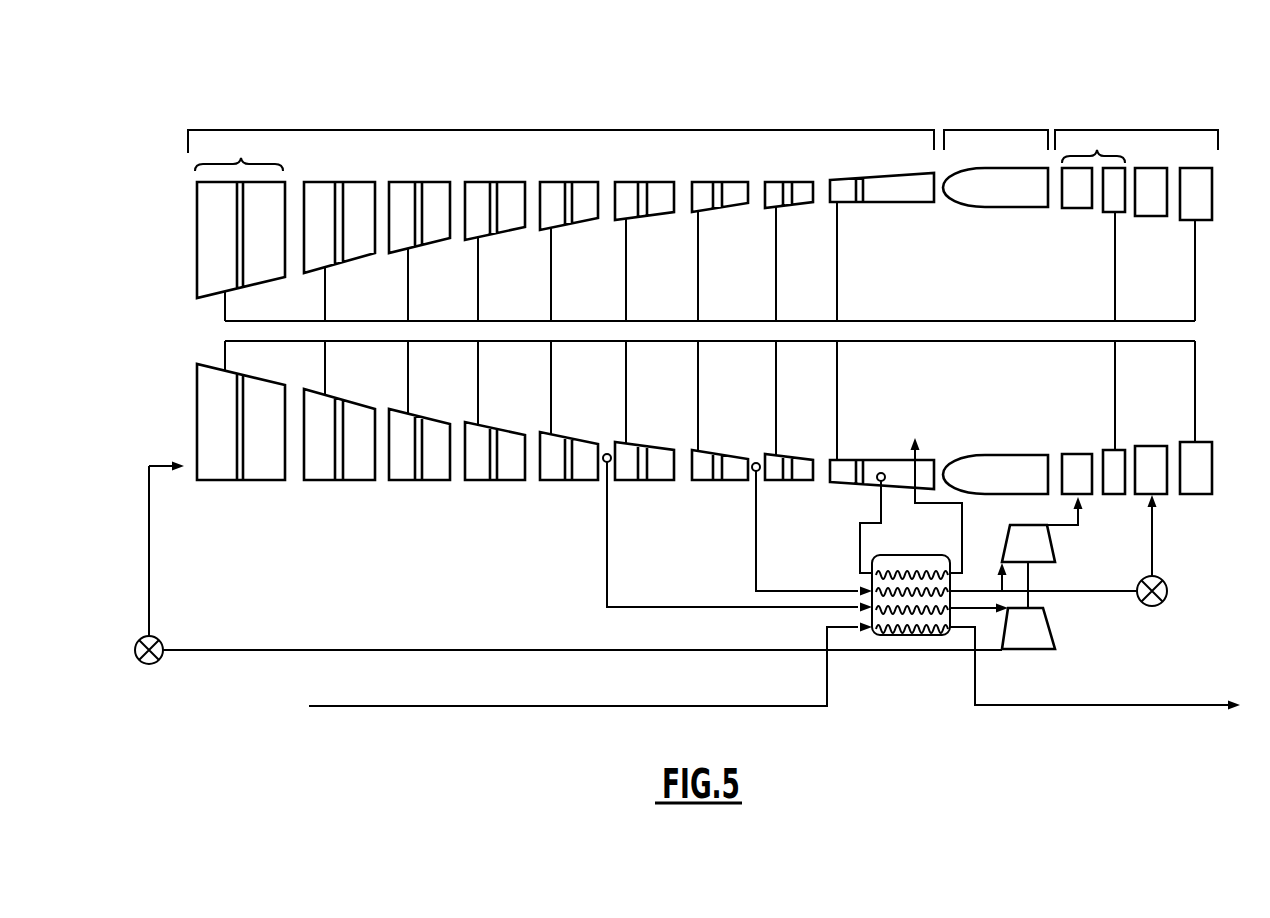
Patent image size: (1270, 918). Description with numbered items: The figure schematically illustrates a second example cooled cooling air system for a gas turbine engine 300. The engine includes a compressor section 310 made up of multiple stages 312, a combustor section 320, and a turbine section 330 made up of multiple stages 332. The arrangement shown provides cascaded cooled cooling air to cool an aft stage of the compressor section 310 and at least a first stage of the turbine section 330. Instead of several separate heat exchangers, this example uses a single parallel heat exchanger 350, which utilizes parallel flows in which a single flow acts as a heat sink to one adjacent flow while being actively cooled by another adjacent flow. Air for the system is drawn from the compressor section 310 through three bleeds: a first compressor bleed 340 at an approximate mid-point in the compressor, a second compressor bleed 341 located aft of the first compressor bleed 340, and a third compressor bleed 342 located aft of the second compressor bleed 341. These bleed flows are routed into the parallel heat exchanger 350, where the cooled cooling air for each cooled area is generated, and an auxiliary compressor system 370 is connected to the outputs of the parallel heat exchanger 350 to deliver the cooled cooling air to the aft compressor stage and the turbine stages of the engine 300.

The gas turbine engine 300 is at (159, 88).
The compressor section 310 is at (565, 130).
The stages 312 is at (241, 158).
The combustor section 320 is at (997, 130).
The turbine section 330 is at (1179, 130).
The stages 332 is at (1098, 150).
The first compressor bleed 340 is at (608, 453).
The second compressor bleed 341 is at (757, 462).
The third compressor bleed 342 is at (880, 472).
The parallel heat exchanger 350 is at (905, 637).
The auxiliary compressor system 370 is at (1060, 608).